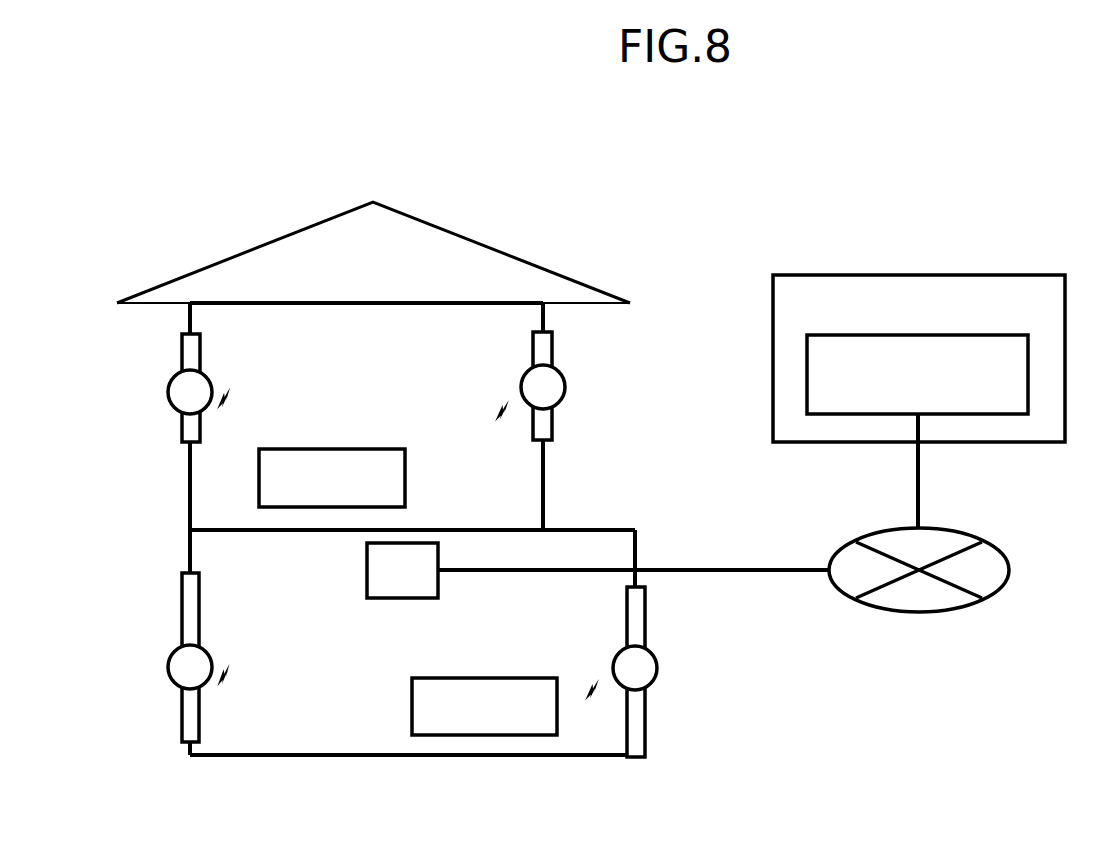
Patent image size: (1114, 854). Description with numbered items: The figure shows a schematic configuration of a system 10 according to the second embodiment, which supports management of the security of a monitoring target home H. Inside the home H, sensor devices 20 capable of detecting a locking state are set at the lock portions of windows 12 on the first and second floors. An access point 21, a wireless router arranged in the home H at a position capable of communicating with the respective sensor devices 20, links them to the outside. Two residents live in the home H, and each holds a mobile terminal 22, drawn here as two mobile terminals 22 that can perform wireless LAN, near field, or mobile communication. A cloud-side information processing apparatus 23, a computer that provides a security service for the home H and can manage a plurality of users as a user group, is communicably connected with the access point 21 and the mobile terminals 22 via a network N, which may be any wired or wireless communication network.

The system 10 is at (986, 180).
The monitoring target home H is at (489, 246).
The window 12 is at (201, 354).
The sensor device 20 is at (212, 378).
The mobile terminal 22 is at (346, 448).
The access point 21 is at (440, 588).
The information processing apparatus 23 is at (972, 335).
The network N is at (969, 536).